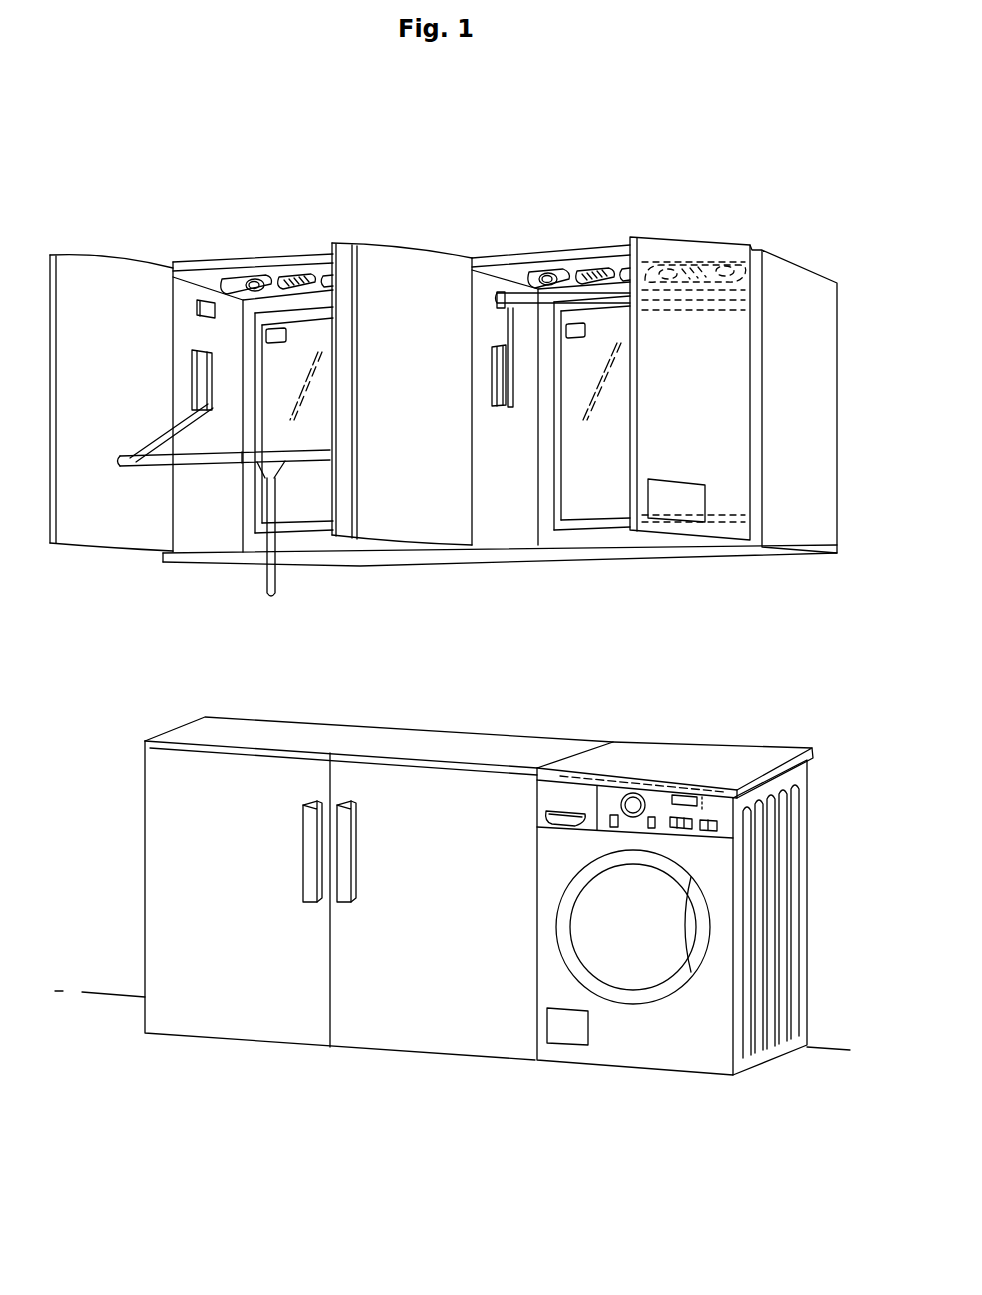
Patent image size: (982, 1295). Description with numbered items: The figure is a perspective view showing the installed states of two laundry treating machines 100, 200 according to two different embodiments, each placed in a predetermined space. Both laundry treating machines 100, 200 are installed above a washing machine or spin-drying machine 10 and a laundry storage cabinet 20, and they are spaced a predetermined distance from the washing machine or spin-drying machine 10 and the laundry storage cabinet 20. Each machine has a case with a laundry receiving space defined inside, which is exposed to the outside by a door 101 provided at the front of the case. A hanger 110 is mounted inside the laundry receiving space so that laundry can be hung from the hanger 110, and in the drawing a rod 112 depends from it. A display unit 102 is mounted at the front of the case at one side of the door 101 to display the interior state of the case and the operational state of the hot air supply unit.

The washing machine or spin-drying machine 10 is at (660, 1050).
The laundry storage cabinet 20 is at (405, 1035).
The laundry treating machine 100 is at (565, 252).
The door 101 is at (450, 502).
The display unit 102 is at (677, 503).
The hanger 110 is at (203, 458).
The hanger rod 112 is at (273, 577).
The laundry treating machine 200 is at (283, 252).